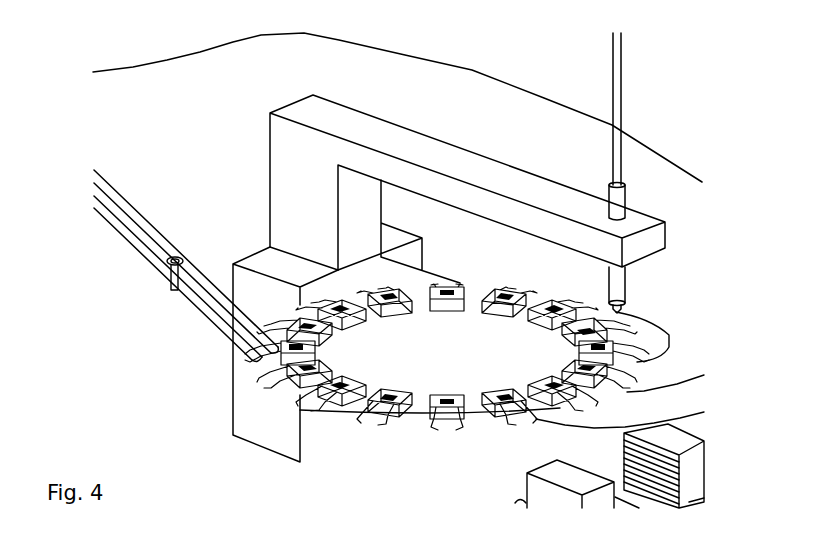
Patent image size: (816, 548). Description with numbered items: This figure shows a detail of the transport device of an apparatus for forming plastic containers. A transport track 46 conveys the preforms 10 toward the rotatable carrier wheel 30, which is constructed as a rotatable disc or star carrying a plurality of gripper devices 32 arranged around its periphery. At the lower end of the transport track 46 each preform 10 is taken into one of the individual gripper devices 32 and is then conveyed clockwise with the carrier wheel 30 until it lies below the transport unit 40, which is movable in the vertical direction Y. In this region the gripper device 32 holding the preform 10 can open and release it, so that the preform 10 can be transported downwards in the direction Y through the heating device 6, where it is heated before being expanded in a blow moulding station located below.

The heating device 6 is at (692, 350).
The preform 10 is at (172, 290).
The carrier wheel 30 is at (437, 370).
The gripper device 32 is at (325, 408).
The transport unit 40 is at (616, 103).
The transport track 46 is at (140, 223).